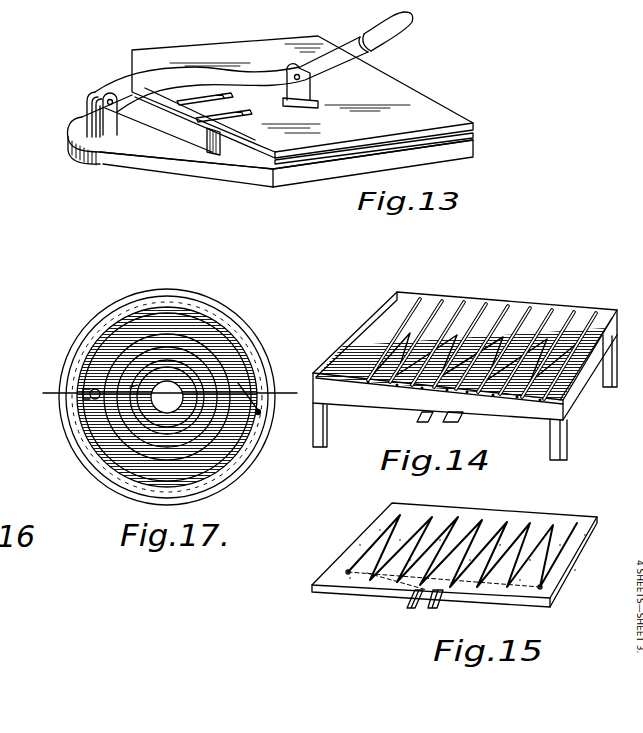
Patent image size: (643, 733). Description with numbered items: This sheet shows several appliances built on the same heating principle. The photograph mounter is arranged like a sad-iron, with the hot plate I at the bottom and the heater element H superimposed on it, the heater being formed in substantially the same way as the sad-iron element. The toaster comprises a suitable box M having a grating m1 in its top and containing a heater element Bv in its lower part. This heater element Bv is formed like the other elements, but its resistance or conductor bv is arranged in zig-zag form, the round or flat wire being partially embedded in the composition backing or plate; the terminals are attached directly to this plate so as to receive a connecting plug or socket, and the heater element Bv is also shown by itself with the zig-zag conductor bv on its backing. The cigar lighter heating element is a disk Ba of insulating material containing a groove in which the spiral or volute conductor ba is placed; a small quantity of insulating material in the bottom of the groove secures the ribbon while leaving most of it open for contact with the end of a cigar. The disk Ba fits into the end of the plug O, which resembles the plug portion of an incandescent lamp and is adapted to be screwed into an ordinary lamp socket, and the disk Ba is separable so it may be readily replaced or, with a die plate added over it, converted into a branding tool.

In FIG. 13, the heater element H is at (475, 125).
In FIG. 13, the hot plate I is at (475, 136).
In FIG. 17, the plug O is at (92, 475).
In FIG. 17, the disk Ba is at (78, 433).
In FIG. 17, the spiral or volute conductor ba is at (107, 360).
In FIG. 14, the box M is at (508, 315).
In FIG. 14, the heater element Bv is at (398, 353).
In FIG. 15, the heater element Bv is at (377, 590).
In FIG. 14, the grating m1 is at (470, 303).
In FIG. 15, the resistance or conductor bv is at (388, 535).